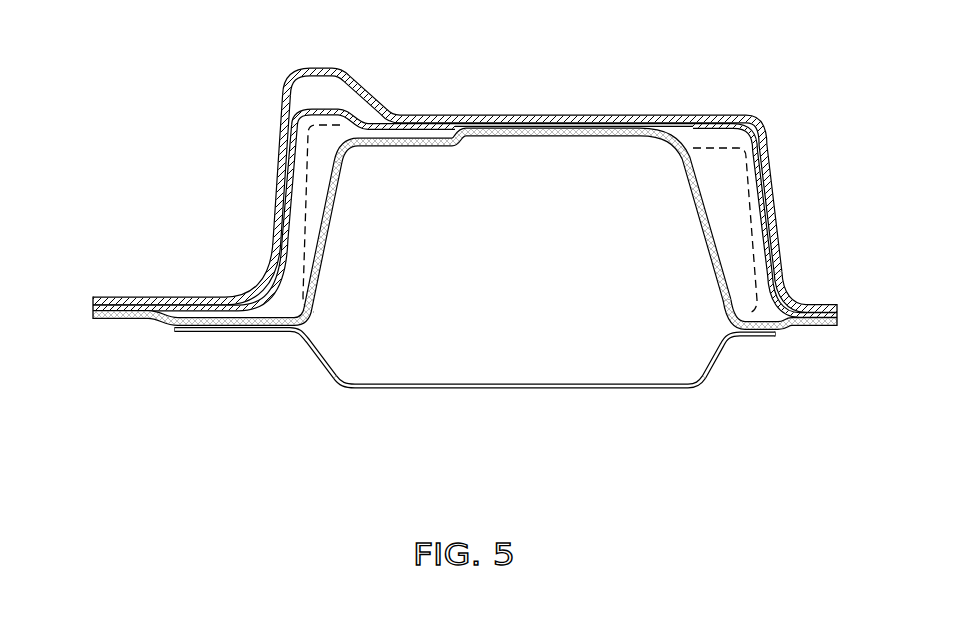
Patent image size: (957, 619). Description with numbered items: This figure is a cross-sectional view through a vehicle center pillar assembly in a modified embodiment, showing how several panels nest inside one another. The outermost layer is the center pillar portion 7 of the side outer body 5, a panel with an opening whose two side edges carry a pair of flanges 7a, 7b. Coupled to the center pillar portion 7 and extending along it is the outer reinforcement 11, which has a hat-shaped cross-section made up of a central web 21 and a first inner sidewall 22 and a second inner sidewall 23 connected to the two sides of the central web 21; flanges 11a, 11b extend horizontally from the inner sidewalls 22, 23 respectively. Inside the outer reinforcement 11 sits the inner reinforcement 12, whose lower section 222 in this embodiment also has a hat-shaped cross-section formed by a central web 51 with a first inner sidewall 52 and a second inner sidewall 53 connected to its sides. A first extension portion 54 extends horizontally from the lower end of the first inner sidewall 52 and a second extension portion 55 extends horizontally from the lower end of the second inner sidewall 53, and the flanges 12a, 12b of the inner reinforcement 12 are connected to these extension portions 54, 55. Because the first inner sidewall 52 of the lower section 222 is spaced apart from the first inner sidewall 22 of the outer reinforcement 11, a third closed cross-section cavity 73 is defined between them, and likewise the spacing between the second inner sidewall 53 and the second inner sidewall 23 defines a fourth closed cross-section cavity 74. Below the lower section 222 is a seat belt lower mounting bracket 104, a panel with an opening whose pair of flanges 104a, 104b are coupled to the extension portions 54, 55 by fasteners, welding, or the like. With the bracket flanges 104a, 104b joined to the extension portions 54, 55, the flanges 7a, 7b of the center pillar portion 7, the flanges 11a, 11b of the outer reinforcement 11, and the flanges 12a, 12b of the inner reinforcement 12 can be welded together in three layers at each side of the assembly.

The side outer body 5 is at (463, 245).
The center pillar portion 7 is at (468, 176).
The flange 7a is at (122, 297).
The flange 7b is at (818, 304).
The outer reinforcement 11 is at (465, 213).
The flange 11a is at (93, 301).
The flange 11b is at (838, 306).
The inner reinforcement 12 is at (463, 245).
The flange 12a is at (93, 314).
The flange 12b is at (838, 323).
The central web 21 is at (386, 112).
The first inner sidewall 22 is at (291, 192).
The second inner sidewall 23 is at (774, 184).
The central web 51 is at (516, 137).
The first inner sidewall 52 is at (331, 245).
The second inner sidewall 53 is at (704, 252).
The first extension portion 54 is at (302, 305).
The second extension portion 55 is at (729, 316).
The third closed cross-section cavity 73 is at (312, 183).
The fourth closed cross-section cavity 74 is at (748, 212).
The seat belt lower mounting bracket 104 is at (484, 397).
The flange 104a is at (232, 333).
The flange 104b is at (760, 338).
The lower section 222 is at (587, 152).